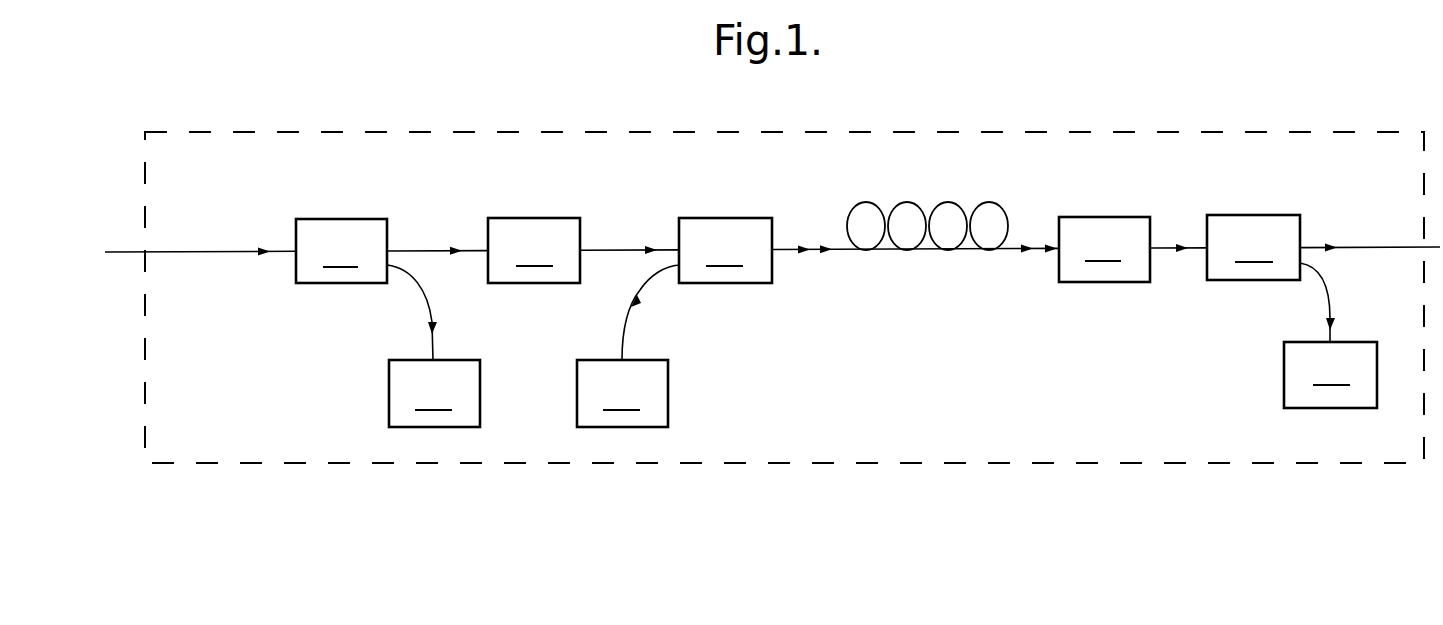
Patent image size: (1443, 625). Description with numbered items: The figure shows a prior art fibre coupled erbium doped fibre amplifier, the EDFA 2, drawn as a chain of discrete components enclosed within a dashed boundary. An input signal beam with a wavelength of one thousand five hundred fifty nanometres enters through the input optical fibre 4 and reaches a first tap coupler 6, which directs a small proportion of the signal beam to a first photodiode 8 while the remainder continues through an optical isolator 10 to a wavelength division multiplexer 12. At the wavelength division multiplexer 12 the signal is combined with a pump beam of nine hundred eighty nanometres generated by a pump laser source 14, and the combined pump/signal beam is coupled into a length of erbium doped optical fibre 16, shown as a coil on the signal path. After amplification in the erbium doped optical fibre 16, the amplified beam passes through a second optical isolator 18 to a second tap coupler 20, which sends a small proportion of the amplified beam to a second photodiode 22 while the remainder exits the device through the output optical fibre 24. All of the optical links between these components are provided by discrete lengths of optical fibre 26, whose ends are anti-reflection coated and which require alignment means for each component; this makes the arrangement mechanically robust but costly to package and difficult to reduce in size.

The EDFA 2 is at (176, 474).
The input optical fibre 4 is at (128, 252).
The first tap coupler 6 is at (341, 251).
The first photodiode 8 is at (434, 393).
The optical isolator 10 is at (534, 250).
The wavelength division multiplexer 12 is at (725, 250).
The pump laser source 14 is at (622, 393).
The erbium doped optical fibre 16 is at (878, 283).
The second optical isolator 18 is at (1104, 249).
The second tap coupler 20 is at (1253, 247).
The second photodiode 22 is at (1330, 375).
The output optical fibre 24 is at (1391, 247).
The optical fibre 26 is at (423, 250).